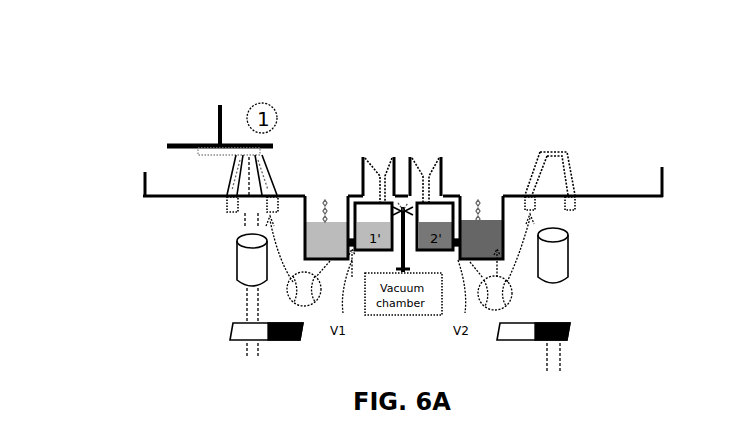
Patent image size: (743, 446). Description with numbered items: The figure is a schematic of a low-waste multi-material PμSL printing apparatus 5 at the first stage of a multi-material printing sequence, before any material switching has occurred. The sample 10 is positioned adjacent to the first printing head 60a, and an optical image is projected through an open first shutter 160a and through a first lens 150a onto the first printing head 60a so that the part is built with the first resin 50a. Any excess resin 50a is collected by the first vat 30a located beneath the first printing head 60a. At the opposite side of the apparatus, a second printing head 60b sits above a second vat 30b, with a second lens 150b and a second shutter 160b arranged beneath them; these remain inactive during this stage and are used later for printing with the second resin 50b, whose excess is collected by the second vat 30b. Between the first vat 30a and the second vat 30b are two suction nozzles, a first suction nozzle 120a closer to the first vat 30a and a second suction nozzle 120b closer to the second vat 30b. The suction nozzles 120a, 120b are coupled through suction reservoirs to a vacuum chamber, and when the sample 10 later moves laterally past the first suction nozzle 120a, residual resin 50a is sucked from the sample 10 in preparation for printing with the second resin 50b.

The printing apparatus 5 is at (506, 84).
The sample 10 is at (205, 143).
The first vat 30a is at (162, 188).
The second vat 30b is at (647, 190).
The first resin 50a is at (317, 230).
The second resin 50b is at (490, 230).
The first printing head 60a is at (245, 148).
The second printing head 60b is at (555, 153).
The first suction nozzle 120a is at (380, 158).
The second suction nozzle 120b is at (427, 158).
The first lens 150a is at (240, 268).
The second lens 150b is at (568, 267).
The first shutter 160a is at (232, 338).
The second shutter 160b is at (567, 337).